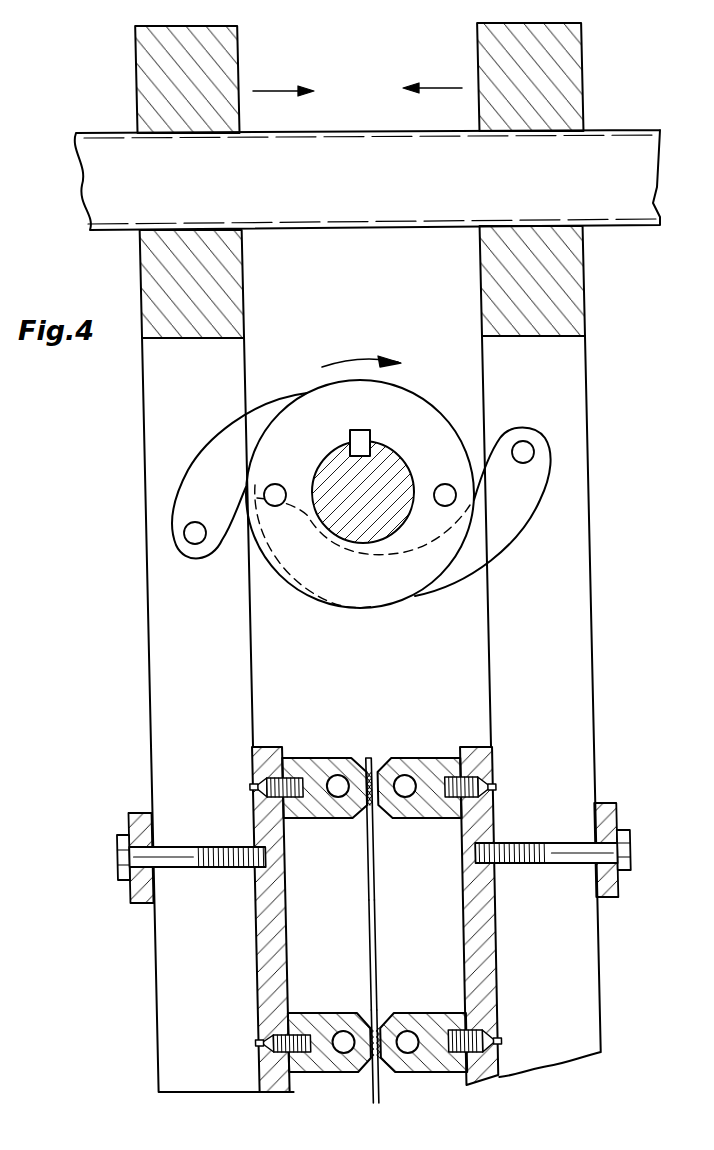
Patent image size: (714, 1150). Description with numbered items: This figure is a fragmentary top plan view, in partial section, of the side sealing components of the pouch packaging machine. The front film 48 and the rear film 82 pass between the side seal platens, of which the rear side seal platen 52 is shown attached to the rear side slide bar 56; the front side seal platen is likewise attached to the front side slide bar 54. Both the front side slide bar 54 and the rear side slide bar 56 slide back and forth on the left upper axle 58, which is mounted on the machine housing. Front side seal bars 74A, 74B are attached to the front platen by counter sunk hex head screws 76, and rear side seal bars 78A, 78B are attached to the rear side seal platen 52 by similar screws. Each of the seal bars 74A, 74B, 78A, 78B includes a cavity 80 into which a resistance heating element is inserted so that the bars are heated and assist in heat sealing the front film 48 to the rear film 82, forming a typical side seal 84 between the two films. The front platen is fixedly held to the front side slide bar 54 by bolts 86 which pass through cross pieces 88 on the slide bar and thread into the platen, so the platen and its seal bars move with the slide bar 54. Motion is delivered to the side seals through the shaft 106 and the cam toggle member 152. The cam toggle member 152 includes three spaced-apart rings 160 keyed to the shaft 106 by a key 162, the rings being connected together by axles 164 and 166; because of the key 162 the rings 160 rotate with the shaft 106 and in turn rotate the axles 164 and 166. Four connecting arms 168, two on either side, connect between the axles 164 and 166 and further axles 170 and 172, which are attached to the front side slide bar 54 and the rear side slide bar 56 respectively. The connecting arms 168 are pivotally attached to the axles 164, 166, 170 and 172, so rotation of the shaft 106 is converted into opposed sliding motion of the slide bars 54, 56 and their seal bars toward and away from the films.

The left upper axle 58 is at (378, 146).
The cam toggle member 152 is at (363, 352).
The rings 160 is at (398, 402).
The shaft 106 is at (393, 467).
The key 162 is at (349, 437).
The axle 164 is at (274, 486).
The axle 166 is at (445, 505).
The connecting arms 168 is at (268, 410).
The axle 170 is at (184, 538).
The axle 172 is at (534, 452).
The front side slide bar 54 is at (163, 747).
The rear side slide bar 56 is at (583, 686).
The rear side seal platen 52 is at (487, 933).
The front side seal bar 74A is at (305, 767).
The rear side seal bar 78A is at (430, 768).
The front side seal bar 74B is at (325, 1010).
The rear side seal bar 78B is at (420, 1026).
The cavity 80 is at (346, 797).
The side seal 84 is at (369, 757).
The rear film 82 is at (378, 935).
The front film 48 is at (370, 950).
The counter sunk hex head screws 76 is at (255, 778).
The bolts 86 is at (188, 866).
The cross pieces 88 is at (133, 905).